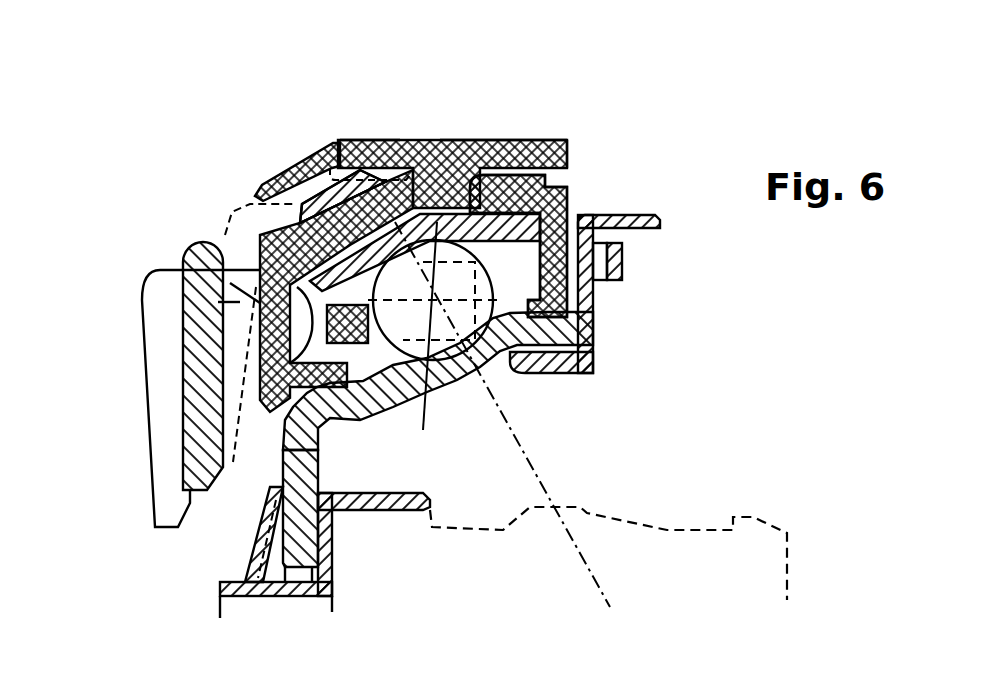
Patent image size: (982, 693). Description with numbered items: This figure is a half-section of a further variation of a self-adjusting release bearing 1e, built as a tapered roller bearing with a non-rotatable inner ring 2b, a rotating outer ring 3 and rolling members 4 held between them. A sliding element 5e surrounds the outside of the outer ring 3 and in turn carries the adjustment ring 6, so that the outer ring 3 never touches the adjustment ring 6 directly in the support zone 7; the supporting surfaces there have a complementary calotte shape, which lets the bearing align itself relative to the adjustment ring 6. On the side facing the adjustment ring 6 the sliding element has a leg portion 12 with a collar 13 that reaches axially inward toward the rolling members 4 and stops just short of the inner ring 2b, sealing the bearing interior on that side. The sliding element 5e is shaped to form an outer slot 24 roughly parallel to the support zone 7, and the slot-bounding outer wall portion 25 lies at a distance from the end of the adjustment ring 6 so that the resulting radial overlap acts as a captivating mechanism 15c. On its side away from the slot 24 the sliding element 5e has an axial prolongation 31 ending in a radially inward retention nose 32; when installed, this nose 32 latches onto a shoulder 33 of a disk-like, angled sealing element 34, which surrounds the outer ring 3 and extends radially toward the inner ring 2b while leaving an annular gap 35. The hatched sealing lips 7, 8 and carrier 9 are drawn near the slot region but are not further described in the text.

The release bearing 1e is at (215, 200).
The inner ring 2b is at (420, 400).
The outer ring 3 is at (560, 212).
The rolling members 4 is at (437, 222).
The sliding element 5e is at (457, 140).
The adjustment ring 6 is at (186, 245).
The support zone 7 is at (322, 182).
The sealing lip 8 is at (322, 182).
The seal carrier 9 is at (368, 142).
The leg portion 12 is at (263, 357).
The collar 13 is at (318, 425).
The captivating mechanism 15c is at (263, 170).
The slot 24 is at (333, 168).
The outer wall portion 25 is at (393, 140).
The axial prolongation 31 is at (507, 140).
The retention nose 32 is at (567, 182).
The shoulder 33 is at (567, 182).
The sealing element 34 is at (593, 306).
The annular gap 35 is at (593, 314).